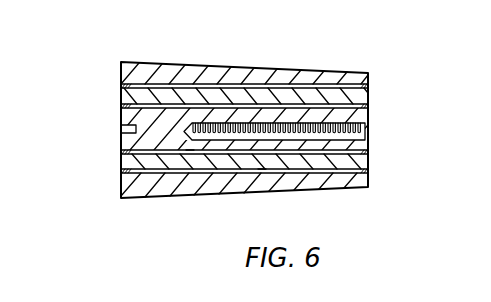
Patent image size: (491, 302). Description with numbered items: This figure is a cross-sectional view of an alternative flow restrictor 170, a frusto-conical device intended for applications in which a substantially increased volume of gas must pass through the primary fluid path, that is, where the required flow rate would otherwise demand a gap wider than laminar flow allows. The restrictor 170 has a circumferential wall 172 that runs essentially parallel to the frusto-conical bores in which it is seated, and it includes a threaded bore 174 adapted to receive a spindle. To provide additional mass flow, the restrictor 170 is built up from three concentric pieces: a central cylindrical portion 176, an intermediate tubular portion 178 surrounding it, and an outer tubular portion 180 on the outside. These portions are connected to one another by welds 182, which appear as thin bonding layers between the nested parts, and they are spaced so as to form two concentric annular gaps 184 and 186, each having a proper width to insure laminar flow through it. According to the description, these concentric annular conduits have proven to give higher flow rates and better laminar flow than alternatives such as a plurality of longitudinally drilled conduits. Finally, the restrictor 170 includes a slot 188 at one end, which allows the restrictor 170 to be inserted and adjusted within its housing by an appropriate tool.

The flow restrictor 170 is at (171, 62).
The circumferential wall 172 is at (328, 73).
The threaded bore 174 is at (367, 130).
The central cylindrical portion 176 is at (121, 140).
The intermediate tubular portion 178 is at (121, 96).
The outer tubular portion 180 is at (122, 188).
The welds 182 is at (121, 86).
The annular gap 184 is at (190, 151).
The annular gap 186 is at (262, 171).
The slot 188 is at (121, 129).